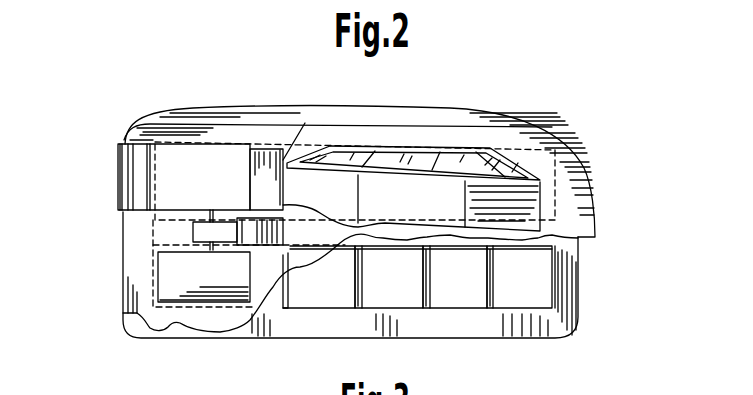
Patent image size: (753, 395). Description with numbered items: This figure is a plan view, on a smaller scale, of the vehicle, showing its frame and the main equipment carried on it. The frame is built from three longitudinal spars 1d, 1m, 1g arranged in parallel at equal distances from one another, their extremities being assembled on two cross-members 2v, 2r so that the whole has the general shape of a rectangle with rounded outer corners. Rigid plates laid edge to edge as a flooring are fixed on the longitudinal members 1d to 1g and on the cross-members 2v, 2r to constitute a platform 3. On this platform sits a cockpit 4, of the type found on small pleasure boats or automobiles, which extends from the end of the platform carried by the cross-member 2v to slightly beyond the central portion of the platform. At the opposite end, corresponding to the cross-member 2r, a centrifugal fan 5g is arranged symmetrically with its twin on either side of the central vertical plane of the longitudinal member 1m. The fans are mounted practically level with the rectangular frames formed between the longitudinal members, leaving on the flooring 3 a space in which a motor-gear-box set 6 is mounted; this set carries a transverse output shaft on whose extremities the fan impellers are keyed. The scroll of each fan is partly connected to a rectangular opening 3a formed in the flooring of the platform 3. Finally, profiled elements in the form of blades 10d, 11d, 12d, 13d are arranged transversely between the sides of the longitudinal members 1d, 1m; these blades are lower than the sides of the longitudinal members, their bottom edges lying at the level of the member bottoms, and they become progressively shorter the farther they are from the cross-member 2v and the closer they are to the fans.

The longitudinal spar 1g is at (497, 103).
The longitudinal spar 1m is at (542, 242).
The longitudinal spar 1d is at (545, 327).
The cross-member 2r is at (137, 258).
The cross-member 2v is at (565, 273).
The platform 3 is at (378, 232).
The rectangular opening 3a is at (189, 287).
The cockpit 4 is at (413, 186).
The centrifugal fan 5g is at (119, 170).
The motor-gear-box set 6 is at (233, 230).
The blade 10d is at (290, 293).
The blade 11d is at (368, 292).
The blade 12d is at (432, 297).
The blade 13d is at (496, 297).